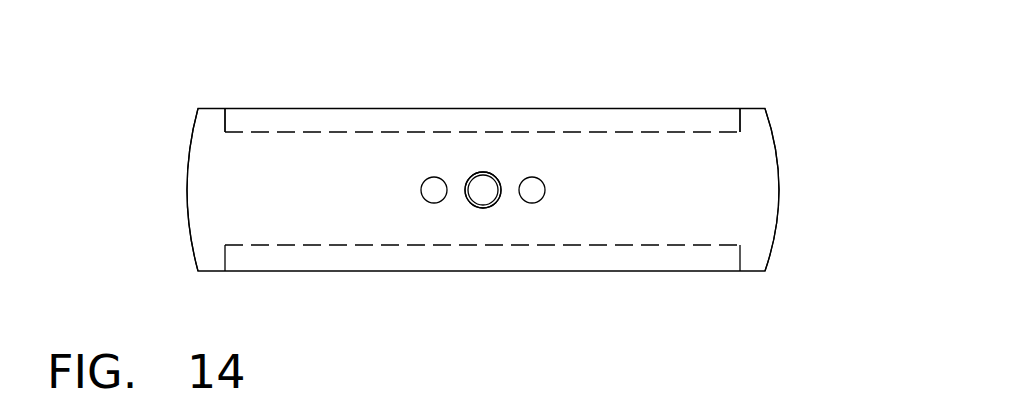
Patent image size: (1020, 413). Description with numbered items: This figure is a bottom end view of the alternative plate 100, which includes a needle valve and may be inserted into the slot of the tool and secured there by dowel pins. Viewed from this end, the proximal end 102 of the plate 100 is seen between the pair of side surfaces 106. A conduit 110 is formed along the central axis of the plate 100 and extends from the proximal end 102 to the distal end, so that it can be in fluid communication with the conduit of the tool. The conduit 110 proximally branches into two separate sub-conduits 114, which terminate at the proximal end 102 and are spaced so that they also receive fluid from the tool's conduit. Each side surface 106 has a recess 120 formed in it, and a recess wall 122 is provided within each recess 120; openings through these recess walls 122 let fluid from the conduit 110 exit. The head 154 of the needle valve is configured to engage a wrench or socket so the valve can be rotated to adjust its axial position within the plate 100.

The plate 100 is at (508, 185).
The proximal end 102 is at (271, 176).
The side surfaces 106 is at (213, 108).
The conduit 110 is at (486, 207).
The sub-conduits 114 is at (430, 201).
The recess 120 is at (603, 118).
The recess wall 122 is at (344, 132).
The head 154 is at (479, 183).